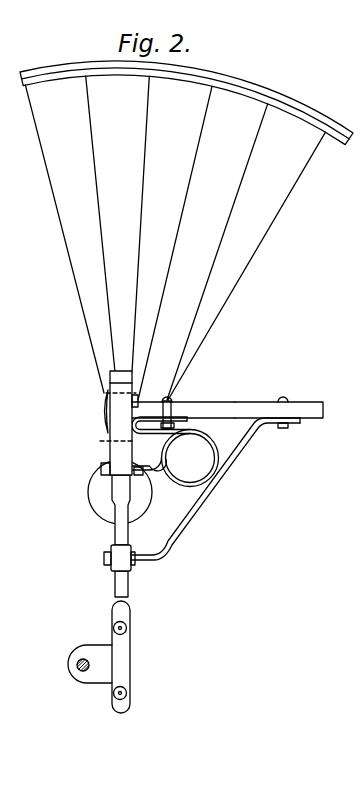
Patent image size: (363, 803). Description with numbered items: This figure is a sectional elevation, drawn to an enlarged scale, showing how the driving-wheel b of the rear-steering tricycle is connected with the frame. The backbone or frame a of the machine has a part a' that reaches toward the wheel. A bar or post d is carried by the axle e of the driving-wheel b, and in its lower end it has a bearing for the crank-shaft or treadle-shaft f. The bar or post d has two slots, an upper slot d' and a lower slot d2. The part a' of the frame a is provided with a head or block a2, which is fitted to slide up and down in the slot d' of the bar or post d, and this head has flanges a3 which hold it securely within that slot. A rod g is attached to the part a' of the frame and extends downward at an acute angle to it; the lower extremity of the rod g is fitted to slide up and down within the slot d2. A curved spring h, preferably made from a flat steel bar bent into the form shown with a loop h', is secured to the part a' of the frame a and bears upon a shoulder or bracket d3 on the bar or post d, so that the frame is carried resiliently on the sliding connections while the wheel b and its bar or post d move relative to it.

The driving-wheel b is at (186, 225).
The backbone or frame a is at (280, 400).
The part of the frame a' is at (183, 409).
The head or block a2 is at (132, 427).
The flanges a3 is at (106, 398).
The bar or post d is at (135, 594).
The slot d' is at (108, 423).
The slot d2 is at (111, 578).
The shoulder or bracket d3 is at (142, 476).
The axle e is at (113, 492).
The crank-shaft or treadle-shaft f is at (90, 664).
The rod g is at (216, 489).
The curved spring h is at (161, 444).
The spring loop h' is at (198, 458).